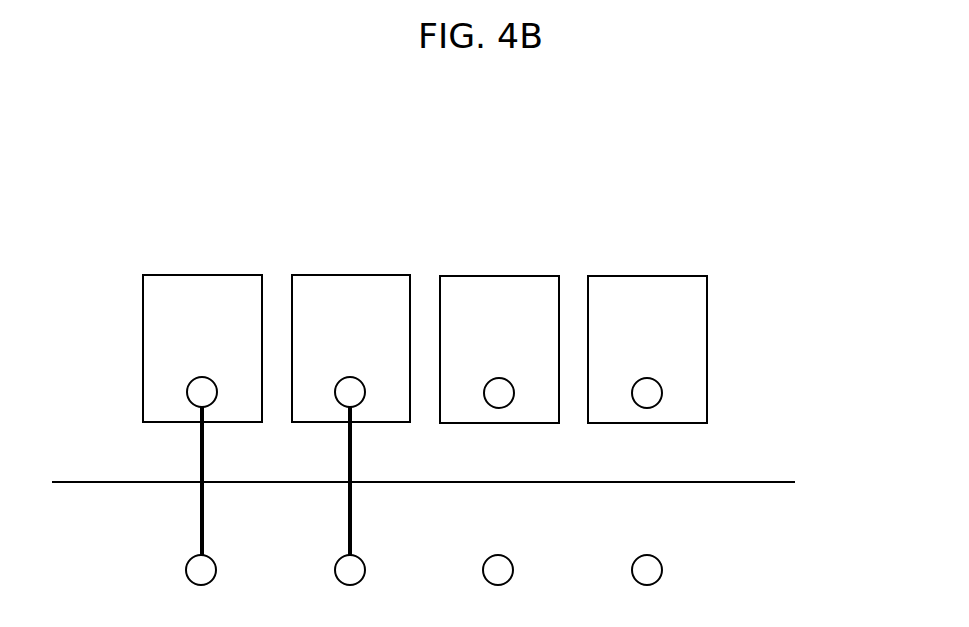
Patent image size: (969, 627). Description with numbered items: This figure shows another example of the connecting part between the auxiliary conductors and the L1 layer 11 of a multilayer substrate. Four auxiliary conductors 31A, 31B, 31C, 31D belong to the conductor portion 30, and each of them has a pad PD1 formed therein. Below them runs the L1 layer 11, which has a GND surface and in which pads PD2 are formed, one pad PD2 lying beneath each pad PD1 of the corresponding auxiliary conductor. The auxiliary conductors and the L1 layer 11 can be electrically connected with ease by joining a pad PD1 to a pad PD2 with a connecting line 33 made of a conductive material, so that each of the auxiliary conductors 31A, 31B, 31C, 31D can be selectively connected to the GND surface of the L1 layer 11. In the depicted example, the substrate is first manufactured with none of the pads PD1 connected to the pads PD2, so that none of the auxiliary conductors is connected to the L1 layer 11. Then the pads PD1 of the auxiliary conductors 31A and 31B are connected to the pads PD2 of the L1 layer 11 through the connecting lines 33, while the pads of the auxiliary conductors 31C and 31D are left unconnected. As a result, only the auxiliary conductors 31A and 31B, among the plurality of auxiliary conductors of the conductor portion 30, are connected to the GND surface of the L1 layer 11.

The conductor portion 30 is at (789, 141).
The auxiliary conductor 31A is at (220, 275).
The auxiliary conductor 31B is at (368, 275).
The auxiliary conductor 31C is at (515, 276).
The auxiliary conductor 31D is at (665, 276).
The pad PD1 is at (187, 386).
The pad PD2 is at (187, 563).
The connecting line 33 is at (198, 465).
The L1 layer 11 is at (755, 481).